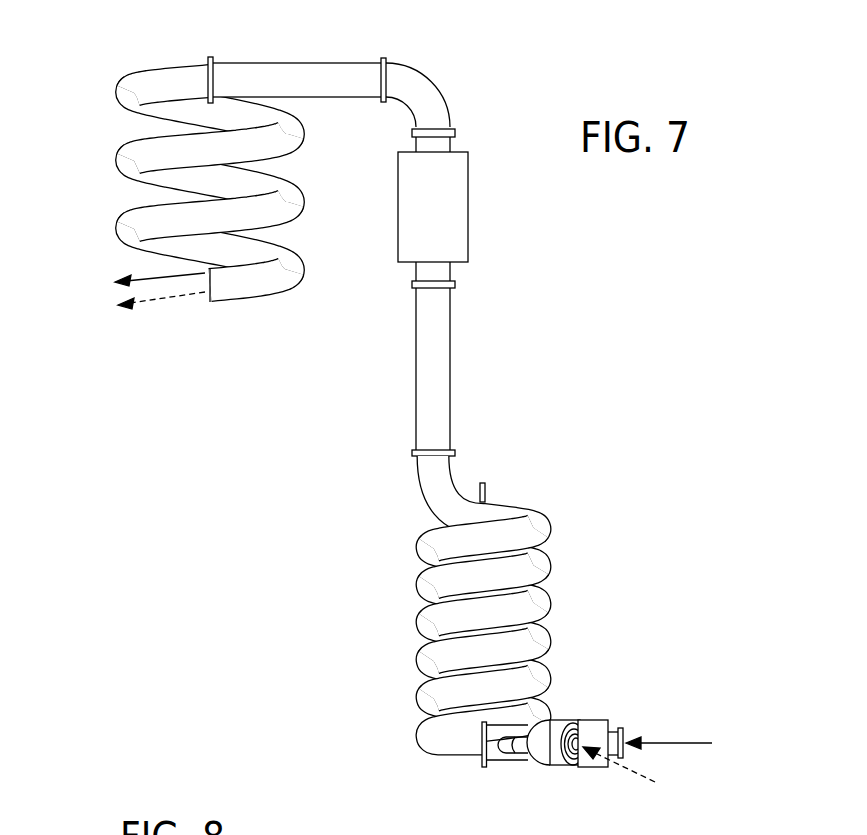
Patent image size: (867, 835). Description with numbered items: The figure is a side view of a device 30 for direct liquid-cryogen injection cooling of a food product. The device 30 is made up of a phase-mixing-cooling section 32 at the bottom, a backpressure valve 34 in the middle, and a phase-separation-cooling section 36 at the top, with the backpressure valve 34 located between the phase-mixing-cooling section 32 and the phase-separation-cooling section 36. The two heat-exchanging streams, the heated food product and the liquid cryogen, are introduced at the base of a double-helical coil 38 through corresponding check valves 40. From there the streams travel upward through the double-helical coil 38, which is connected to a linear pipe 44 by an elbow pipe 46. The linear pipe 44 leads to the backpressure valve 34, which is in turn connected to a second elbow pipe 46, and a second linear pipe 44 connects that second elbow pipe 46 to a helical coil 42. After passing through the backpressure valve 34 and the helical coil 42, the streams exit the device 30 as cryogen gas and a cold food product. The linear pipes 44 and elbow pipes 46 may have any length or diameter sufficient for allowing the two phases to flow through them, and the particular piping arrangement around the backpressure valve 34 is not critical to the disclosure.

The device 30 is at (604, 379).
The phase-mixing-cooling section 32 is at (384, 495).
The backpressure valve 34 is at (455, 215).
The phase-separation-cooling section 36 is at (312, 103).
The double-helical coil 38 is at (553, 520).
The check valves 40 is at (598, 720).
The helical coil 42 is at (115, 160).
The linear pipe 44 is at (300, 70).
The elbow pipe 46 is at (428, 102).